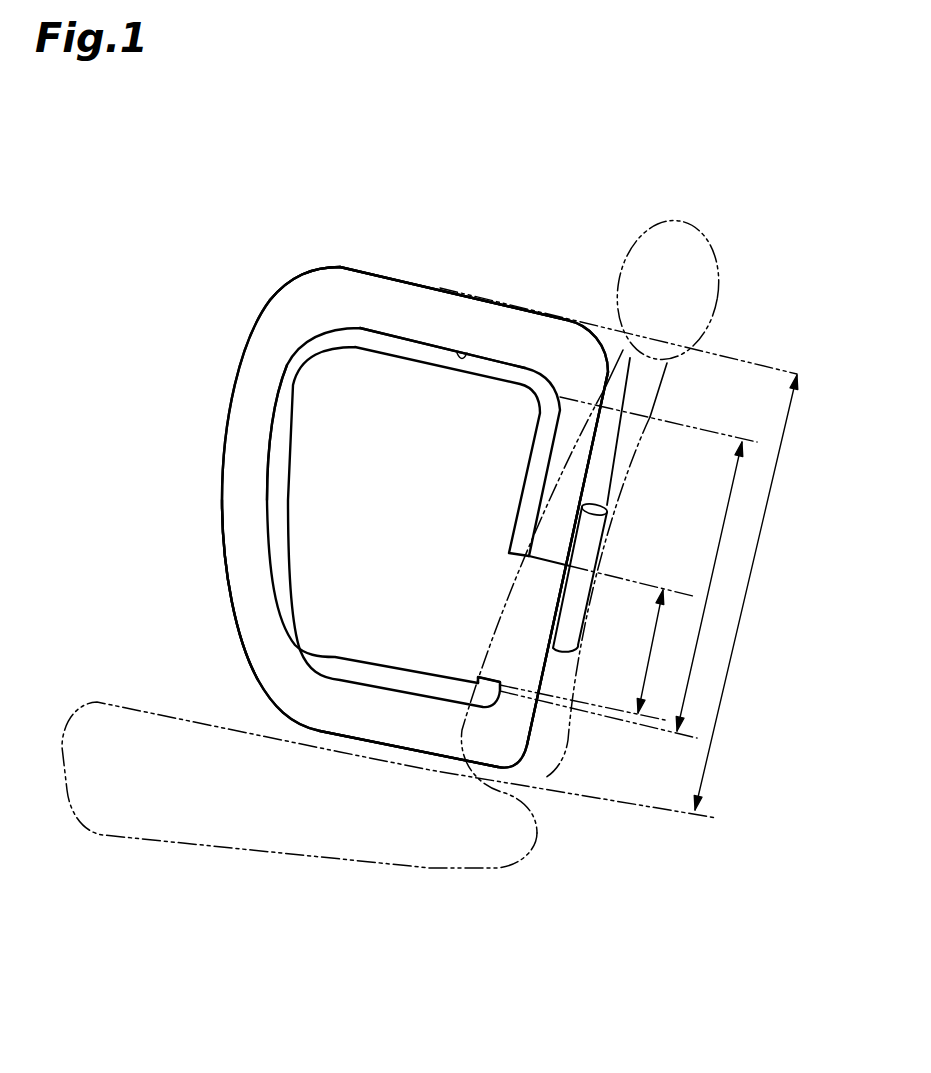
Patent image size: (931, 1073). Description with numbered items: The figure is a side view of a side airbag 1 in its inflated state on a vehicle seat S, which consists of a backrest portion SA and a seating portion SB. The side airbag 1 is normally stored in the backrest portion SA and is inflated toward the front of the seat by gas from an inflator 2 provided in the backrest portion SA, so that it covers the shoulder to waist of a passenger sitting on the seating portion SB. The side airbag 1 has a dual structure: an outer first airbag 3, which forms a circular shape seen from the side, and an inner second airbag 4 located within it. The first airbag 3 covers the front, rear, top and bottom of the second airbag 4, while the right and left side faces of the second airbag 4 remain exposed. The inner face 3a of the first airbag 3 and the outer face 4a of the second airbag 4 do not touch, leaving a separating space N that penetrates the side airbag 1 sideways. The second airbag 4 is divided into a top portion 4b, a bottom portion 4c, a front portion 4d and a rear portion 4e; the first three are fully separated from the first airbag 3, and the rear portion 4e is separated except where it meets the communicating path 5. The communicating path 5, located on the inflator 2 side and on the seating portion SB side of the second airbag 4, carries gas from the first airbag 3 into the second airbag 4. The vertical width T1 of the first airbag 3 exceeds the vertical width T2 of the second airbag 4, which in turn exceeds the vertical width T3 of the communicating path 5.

The side airbag 1 is at (292, 250).
The inflator 2 is at (587, 538).
The first airbag 3 is at (382, 290).
The inner face 3a is at (463, 353).
The second airbag 4 is at (283, 498).
The outer face 4a is at (290, 568).
The top portion 4b is at (417, 392).
The bottom portion 4c is at (384, 648).
The front portion 4d is at (313, 467).
The rear portion 4e is at (503, 472).
The communicating path 5 is at (505, 637).
The separating space N is at (290, 393).
The vehicle seat S is at (727, 845).
The backrest portion SA is at (568, 745).
The seating portion SB is at (537, 840).
The vertical width T1 is at (747, 607).
The vertical width T2 is at (709, 598).
The vertical width T3 is at (647, 665).